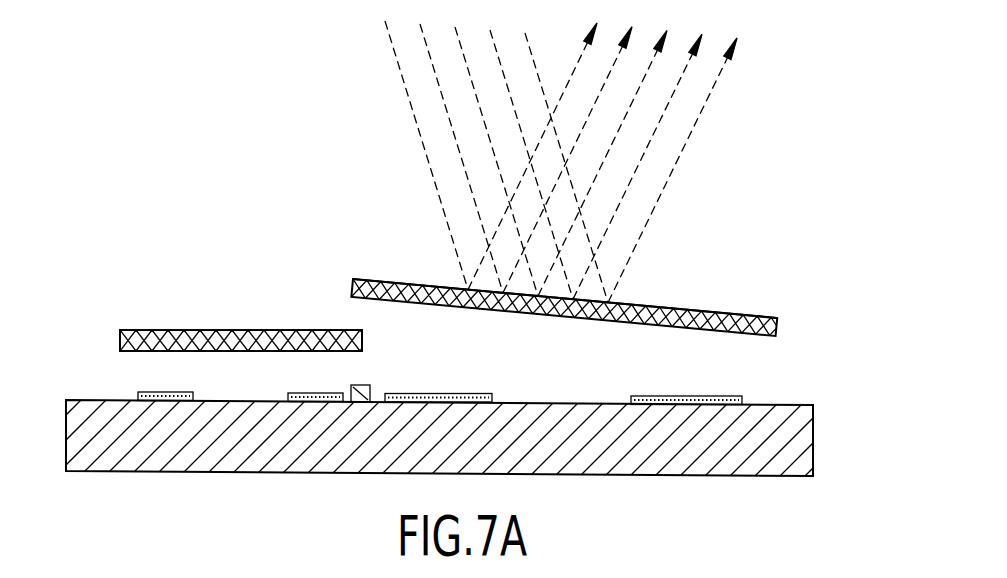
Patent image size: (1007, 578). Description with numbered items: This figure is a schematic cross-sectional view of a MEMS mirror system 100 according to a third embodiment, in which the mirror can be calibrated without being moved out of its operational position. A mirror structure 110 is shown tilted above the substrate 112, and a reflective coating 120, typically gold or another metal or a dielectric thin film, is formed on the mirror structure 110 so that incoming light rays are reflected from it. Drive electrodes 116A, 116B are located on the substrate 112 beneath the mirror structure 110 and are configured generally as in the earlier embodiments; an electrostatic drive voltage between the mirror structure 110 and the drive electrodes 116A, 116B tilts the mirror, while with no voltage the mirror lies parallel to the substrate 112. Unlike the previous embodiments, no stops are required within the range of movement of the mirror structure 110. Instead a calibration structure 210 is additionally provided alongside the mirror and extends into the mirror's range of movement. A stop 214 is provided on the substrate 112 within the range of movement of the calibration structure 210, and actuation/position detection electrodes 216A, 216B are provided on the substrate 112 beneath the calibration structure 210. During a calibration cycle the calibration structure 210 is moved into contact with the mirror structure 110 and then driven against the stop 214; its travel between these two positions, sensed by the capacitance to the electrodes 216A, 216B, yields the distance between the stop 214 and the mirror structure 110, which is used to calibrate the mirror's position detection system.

The MEMS mirror system 100 is at (806, 252).
The mirror structure 110 is at (790, 323).
The reflective coating 120 is at (384, 281).
The calibration structure 210 is at (110, 330).
The stop 214 is at (362, 385).
The actuation/position detection electrode 216A is at (153, 392).
The actuation/position detection electrode 216B is at (307, 393).
The drive electrode 116A is at (455, 393).
The drive electrode 116B is at (678, 396).
The substrate 112 is at (813, 440).